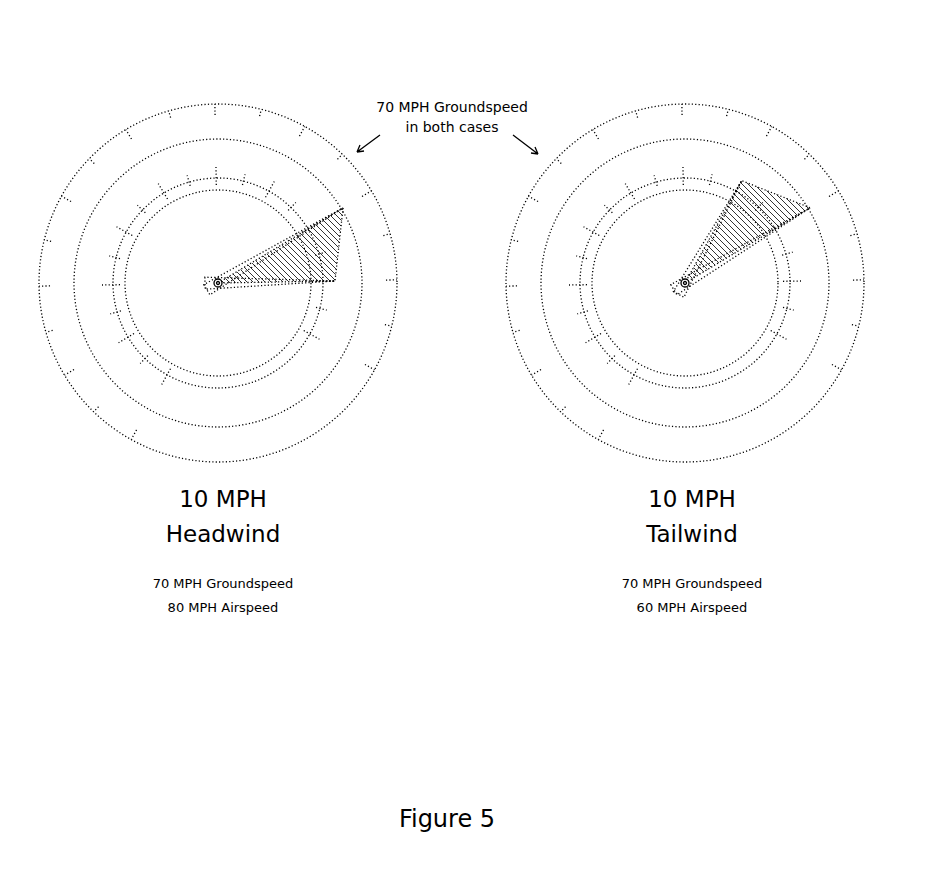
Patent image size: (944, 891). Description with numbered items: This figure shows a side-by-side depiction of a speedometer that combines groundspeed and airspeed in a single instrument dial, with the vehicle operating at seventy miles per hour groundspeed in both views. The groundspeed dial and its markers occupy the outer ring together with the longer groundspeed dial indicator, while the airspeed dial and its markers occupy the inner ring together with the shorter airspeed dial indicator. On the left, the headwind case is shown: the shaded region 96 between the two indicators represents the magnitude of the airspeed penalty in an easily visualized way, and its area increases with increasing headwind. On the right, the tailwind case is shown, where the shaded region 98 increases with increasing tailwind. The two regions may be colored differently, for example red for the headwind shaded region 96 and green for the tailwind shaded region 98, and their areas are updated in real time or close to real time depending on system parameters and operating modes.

The shaded region 96 is at (327, 264).
The shaded region 98 is at (789, 214).